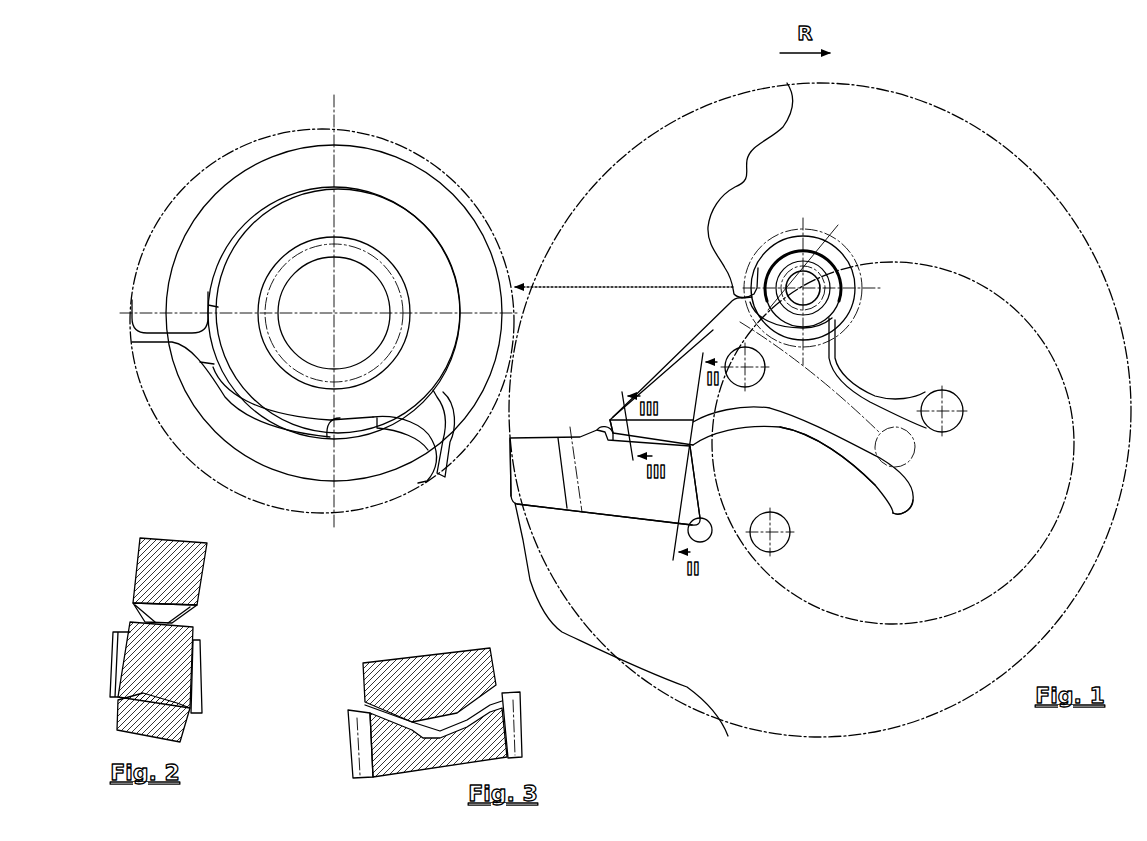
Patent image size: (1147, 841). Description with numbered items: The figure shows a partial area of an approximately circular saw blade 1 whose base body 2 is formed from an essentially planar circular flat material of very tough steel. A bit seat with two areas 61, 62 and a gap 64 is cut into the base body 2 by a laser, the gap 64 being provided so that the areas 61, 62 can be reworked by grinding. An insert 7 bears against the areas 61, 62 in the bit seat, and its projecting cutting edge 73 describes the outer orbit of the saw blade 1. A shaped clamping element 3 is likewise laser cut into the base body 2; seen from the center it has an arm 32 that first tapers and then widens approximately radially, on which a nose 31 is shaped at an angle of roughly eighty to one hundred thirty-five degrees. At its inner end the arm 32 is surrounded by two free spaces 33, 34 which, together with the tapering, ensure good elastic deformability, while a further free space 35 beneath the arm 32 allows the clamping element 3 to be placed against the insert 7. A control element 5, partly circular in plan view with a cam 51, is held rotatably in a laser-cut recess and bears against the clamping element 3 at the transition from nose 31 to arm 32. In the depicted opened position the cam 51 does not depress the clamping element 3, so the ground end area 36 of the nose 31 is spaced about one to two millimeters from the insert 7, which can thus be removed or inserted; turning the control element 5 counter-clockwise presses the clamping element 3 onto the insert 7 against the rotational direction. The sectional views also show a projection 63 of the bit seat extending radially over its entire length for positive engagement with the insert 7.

In FIG. 1, the saw blade 1 is at (950, 165).
In FIG. 1, the base body 2 is at (820, 410).
In FIG. 1, the clamping element 3 is at (700, 333).
In FIG. 1, the control element 5 is at (817, 262).
In FIG. 1, the cam 51 is at (770, 307).
In FIG. 1, the insert 7 is at (605, 476).
In FIG. 2, the insert 7 is at (133, 662).
In FIG. 3, the insert 7 is at (393, 752).
In FIG. 1, the nose 31 is at (677, 380).
In FIG. 2, the nose 31 is at (150, 562).
In FIG. 3, the nose 31 is at (387, 668).
In FIG. 1, the arm 32 is at (724, 413).
In FIG. 1, the free space 33 is at (908, 497).
In FIG. 1, the free space 34 is at (955, 407).
In FIG. 1, the free space 35 is at (802, 433).
In FIG. 1, the end area 36 is at (617, 423).
In FIG. 1, the area 61 is at (636, 526).
In FIG. 1, the area 62 is at (706, 462).
In FIG. 2, the projection 63 is at (140, 698).
In FIG. 1, the gap 64 is at (704, 532).
In FIG. 1, the cutting edge 73 is at (510, 435).